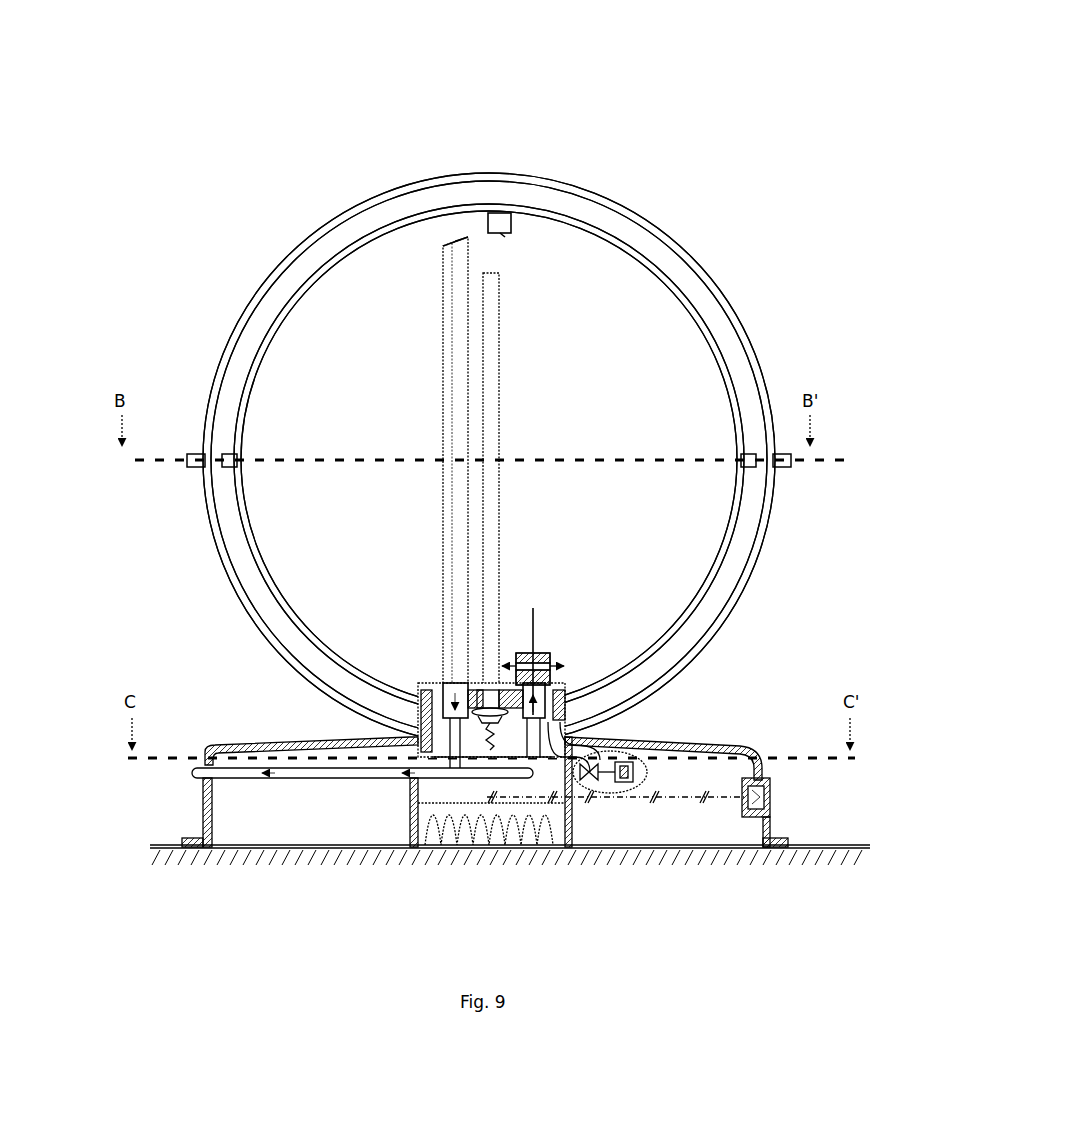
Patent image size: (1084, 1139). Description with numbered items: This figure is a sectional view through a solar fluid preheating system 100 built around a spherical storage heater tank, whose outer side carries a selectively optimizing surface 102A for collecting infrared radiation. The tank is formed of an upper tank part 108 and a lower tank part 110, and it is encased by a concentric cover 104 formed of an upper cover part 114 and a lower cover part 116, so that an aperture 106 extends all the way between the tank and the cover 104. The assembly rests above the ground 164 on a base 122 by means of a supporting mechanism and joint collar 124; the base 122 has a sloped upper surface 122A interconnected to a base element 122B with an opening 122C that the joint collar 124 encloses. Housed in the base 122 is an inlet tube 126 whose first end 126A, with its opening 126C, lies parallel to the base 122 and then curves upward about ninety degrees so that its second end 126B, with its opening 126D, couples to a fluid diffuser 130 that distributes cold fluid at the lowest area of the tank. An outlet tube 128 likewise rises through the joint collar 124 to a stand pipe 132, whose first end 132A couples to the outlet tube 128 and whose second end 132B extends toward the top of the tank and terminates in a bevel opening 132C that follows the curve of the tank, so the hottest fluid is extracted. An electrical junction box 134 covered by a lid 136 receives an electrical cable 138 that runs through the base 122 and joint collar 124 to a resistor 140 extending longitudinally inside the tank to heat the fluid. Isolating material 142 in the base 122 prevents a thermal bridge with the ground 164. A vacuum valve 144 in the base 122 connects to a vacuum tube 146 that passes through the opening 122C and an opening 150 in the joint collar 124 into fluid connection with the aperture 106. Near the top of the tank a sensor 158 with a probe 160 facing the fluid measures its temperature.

The solar fluid preheating system 100 is at (592, 99).
The selectively optimizing surface 102A is at (236, 481).
The cover 104 is at (732, 297).
The aperture 106 is at (665, 229).
The upper tank part 108 is at (258, 358).
The lower tank part 110 is at (266, 582).
The upper cover part 114 is at (250, 302).
The lower cover part 116 is at (211, 521).
The base 122 is at (222, 745).
The upper surface 122A is at (276, 740).
The base element 122B is at (200, 803).
The opening 122C is at (407, 823).
The supporting mechanism and joint collar 124 is at (418, 700).
The inlet tube 126 is at (463, 779).
The first end of inlet tube 126A is at (468, 776).
The second end of inlet tube 126B is at (547, 699).
The opening of first end 126C is at (462, 768).
The opening of second end 126D is at (548, 653).
The outlet tube 128 is at (205, 785).
The fluid diffuser 130 is at (562, 653).
The stand pipe 132 is at (445, 412).
The first end of stand pipe 132A is at (443, 688).
The second end of stand pipe 132B is at (443, 246).
The bevel opening 132C is at (457, 237).
The electrical junction box 134 is at (758, 818).
The lid 136 is at (786, 840).
The electrical cable 138 is at (482, 850).
The resistor 140 is at (502, 535).
The isolating material 142 is at (598, 800).
The vacuum valve 144 is at (573, 812).
The vacuum tube 146 is at (582, 719).
The opening in supporting mechanism and joint collar 150 is at (565, 709).
The sensor 158 is at (511, 215).
The probe 160 is at (505, 237).
The ground 164 is at (800, 846).